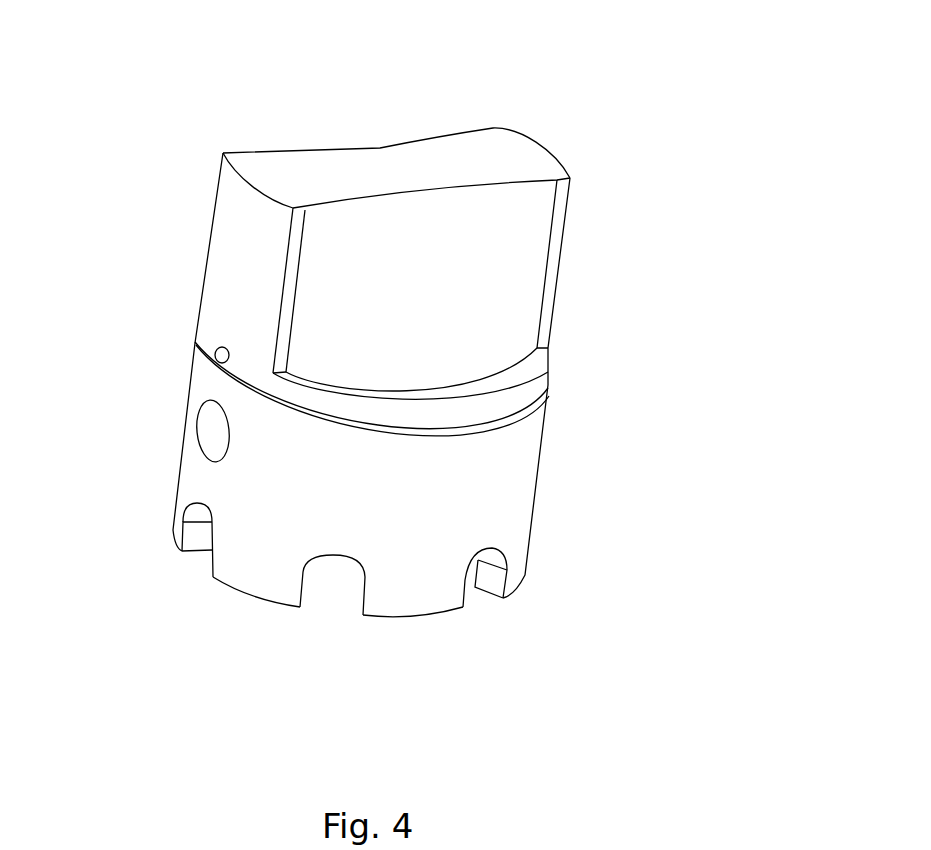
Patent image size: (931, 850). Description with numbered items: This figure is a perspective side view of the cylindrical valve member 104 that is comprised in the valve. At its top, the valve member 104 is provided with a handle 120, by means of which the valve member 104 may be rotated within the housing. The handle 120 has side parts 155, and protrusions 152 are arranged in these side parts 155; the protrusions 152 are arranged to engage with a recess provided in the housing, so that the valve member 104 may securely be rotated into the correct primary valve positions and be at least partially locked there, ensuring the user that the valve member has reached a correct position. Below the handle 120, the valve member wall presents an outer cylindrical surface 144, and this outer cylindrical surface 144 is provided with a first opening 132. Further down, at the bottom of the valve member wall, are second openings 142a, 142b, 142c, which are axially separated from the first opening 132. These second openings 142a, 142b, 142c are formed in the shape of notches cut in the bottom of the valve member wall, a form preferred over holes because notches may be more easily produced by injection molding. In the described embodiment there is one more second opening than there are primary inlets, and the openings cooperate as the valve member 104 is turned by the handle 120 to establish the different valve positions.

The valve member 104 is at (642, 143).
The handle 120 is at (413, 172).
The side parts 155 is at (242, 248).
The protrusions 152 is at (213, 353).
The first opening 132 is at (220, 432).
The outer cylindrical surface 144 is at (492, 480).
The second opening 142a is at (200, 555).
The second opening 142b is at (333, 587).
The second opening 142c is at (481, 600).